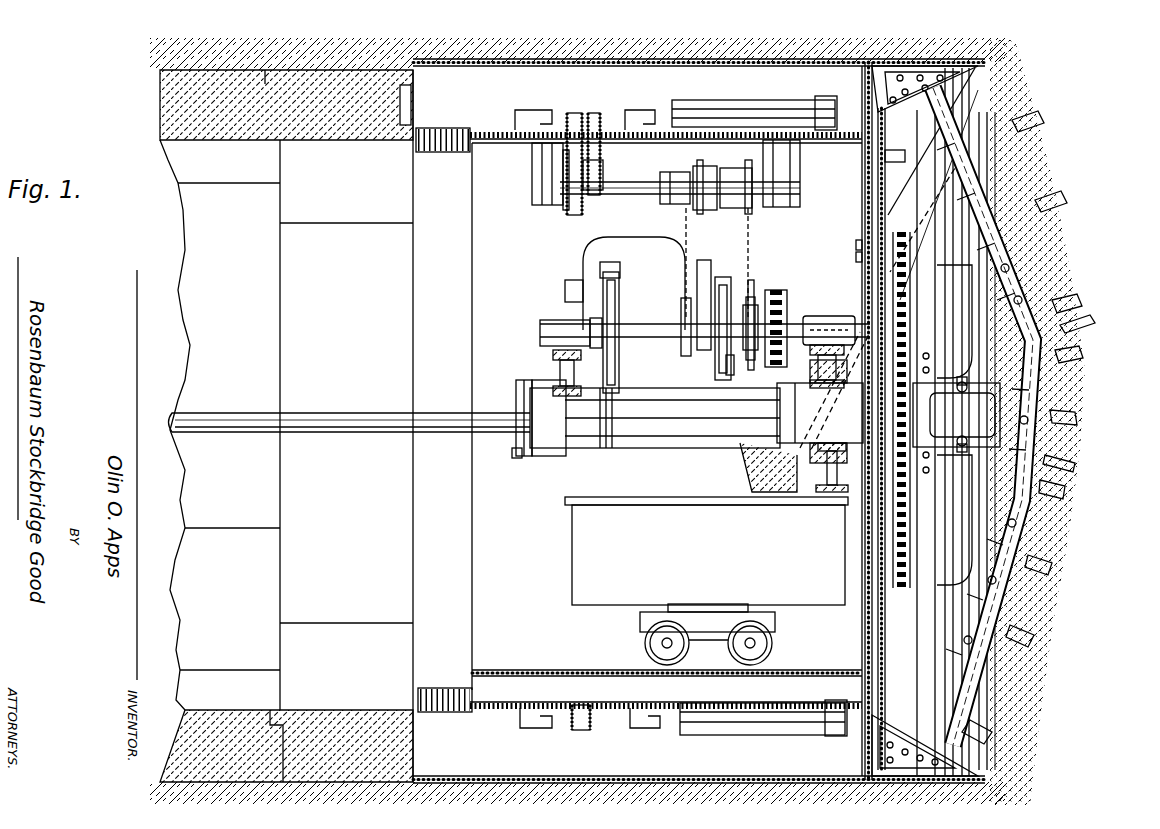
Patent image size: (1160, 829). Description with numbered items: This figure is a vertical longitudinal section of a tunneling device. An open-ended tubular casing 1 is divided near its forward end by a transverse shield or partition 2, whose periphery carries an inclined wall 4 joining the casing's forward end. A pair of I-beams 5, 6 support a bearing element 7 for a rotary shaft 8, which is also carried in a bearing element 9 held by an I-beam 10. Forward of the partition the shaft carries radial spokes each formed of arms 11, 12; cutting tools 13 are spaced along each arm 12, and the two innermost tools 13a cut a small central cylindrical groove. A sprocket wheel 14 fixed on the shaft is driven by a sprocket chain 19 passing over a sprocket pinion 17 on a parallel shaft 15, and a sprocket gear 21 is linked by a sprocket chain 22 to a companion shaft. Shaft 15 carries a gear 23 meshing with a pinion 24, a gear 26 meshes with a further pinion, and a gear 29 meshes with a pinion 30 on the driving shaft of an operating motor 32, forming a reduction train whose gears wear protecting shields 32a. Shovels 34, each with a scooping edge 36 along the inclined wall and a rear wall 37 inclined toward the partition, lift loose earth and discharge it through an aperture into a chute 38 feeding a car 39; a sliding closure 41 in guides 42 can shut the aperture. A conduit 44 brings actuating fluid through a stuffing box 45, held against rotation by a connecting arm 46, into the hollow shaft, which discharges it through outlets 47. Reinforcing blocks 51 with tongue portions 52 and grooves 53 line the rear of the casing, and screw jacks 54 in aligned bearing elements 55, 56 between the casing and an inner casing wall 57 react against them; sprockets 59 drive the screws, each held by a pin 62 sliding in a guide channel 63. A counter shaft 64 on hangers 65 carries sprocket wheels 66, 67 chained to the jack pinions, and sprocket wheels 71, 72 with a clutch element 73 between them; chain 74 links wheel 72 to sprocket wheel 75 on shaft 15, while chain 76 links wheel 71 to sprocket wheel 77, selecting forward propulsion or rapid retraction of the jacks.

The tubular casing 1 is at (600, 62).
The shield or partition 2 is at (882, 530).
The inclined wall 4 is at (985, 64).
The I-beam 5 is at (836, 478).
The I-beam 6 is at (832, 378).
The bearing element 7 is at (810, 410).
The rotary shaft 8 is at (668, 447).
The bearing element 9 is at (566, 457).
The I-beam 10 is at (556, 372).
The arm 11 is at (915, 238).
The arm 12 is at (1040, 312).
The cutting or excavating tools 13 is at (1008, 205).
The innermost tools 13a is at (1066, 340).
The sprocket wheel 14 is at (912, 545).
The shaft 15 is at (640, 323).
The sprocket pinion 17 is at (908, 328).
The sprocket chain 19 is at (915, 402).
The sprocket gear 21 is at (852, 324).
The sprocket chain 22 is at (778, 290).
The gear 23 is at (620, 285).
The pinion 24 is at (600, 307).
The gear 26 is at (772, 370).
The gear 29 is at (710, 262).
The pinion 30 is at (725, 277).
The operating motor 32 is at (582, 270).
The protecting shield 32a is at (612, 266).
The shovel 34 is at (882, 640).
The scooping edge 36 is at (954, 321).
The rear wall 37 is at (945, 490).
The chute 38 is at (748, 472).
The car 39 is at (583, 568).
The closure 41 is at (864, 245).
The guides 42 is at (864, 258).
The conduit 44 is at (322, 413).
The stuffing box 45 is at (518, 395).
The foot 46 is at (518, 466).
The outlets 47 is at (968, 388).
The arcuate or sectional blocks 51 is at (200, 570).
The tongue portion 52 is at (300, 718).
The groove 53 is at (268, 720).
The jacks 54 is at (442, 130).
The bearing element 55 is at (637, 112).
The bearing element 56 is at (526, 112).
The inner casing wall 57 is at (480, 234).
The sprockets 59 is at (574, 112).
The pin 62 is at (822, 105).
The guide channel 63 is at (715, 102).
The counter shaft 64 is at (650, 196).
The hangers 65 is at (530, 188).
The sprocket wheel 66 is at (592, 216).
The sprocket wheel 67 is at (567, 215).
The sprocket wheel 71 is at (670, 174).
The sprocket wheel 72 is at (738, 170).
The clutch element 73 is at (705, 170).
The chain 74 is at (755, 264).
The sprocket wheel 75 is at (750, 306).
The chain 76 is at (684, 225).
The sprocket wheel 77 is at (682, 348).